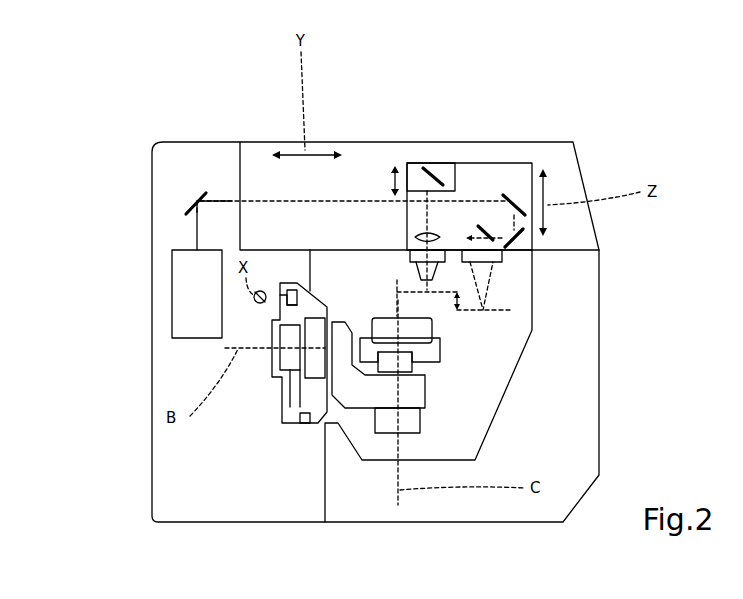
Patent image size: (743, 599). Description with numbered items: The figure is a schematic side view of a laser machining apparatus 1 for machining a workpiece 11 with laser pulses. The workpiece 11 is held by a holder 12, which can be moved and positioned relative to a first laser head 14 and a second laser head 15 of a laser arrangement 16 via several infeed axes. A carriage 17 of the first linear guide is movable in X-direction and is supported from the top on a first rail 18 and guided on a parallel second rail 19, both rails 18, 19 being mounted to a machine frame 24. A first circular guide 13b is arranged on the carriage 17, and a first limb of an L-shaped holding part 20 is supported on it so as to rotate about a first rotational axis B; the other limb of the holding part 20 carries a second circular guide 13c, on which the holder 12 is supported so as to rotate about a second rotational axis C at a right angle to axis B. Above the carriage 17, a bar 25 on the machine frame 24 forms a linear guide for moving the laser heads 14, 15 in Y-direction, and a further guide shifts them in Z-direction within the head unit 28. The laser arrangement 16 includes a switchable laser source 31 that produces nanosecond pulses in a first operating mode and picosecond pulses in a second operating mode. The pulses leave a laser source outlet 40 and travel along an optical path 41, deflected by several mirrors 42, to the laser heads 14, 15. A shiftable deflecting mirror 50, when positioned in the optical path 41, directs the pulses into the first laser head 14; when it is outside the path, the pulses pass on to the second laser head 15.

The laser processing machine 1 is at (658, 133).
The workpiece 11 is at (435, 320).
The holder 12 is at (432, 357).
The first circular guide 13b is at (310, 382).
The second circular guide 13c is at (388, 463).
The first laser head 14 is at (407, 237).
The second laser head 15 is at (510, 265).
The laser arrangement 16 is at (494, 107).
The carriage 17 is at (320, 300).
The first rail 18 is at (303, 425).
The second rail 19 is at (285, 301).
The L-shaped holding part 20 is at (423, 400).
The machine frame 24 is at (160, 452).
The bar 25 is at (365, 153).
The processing head 28 is at (533, 162).
The laser source 31 is at (187, 283).
The laser source outlet 40 is at (195, 250).
The optical path 41 is at (222, 196).
The mirrors 42 is at (198, 196).
The deflecting mirror 50 is at (440, 163).